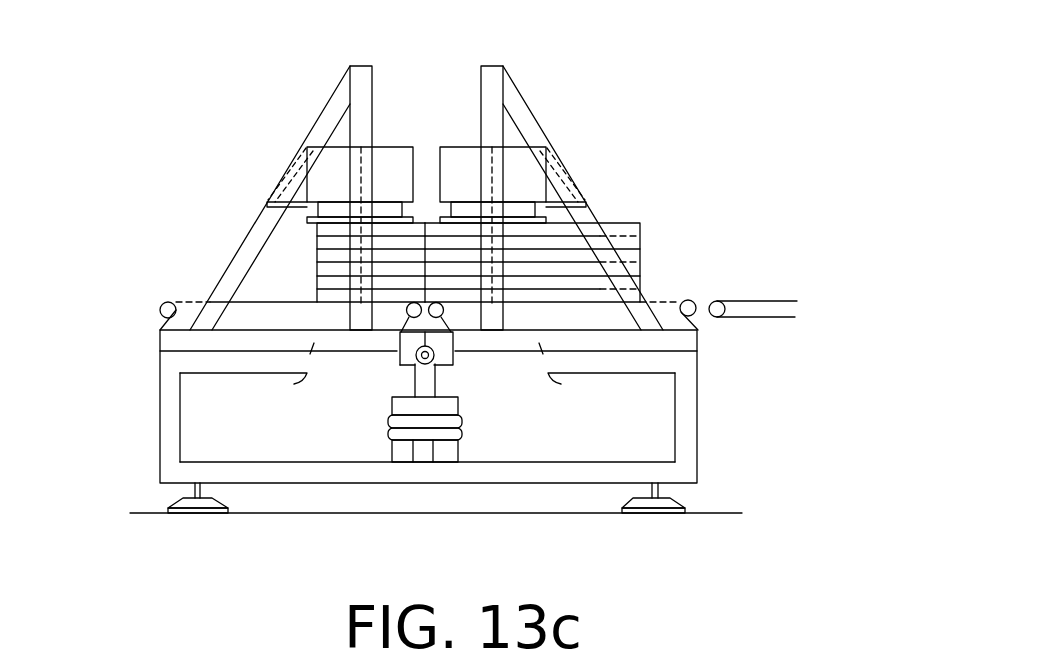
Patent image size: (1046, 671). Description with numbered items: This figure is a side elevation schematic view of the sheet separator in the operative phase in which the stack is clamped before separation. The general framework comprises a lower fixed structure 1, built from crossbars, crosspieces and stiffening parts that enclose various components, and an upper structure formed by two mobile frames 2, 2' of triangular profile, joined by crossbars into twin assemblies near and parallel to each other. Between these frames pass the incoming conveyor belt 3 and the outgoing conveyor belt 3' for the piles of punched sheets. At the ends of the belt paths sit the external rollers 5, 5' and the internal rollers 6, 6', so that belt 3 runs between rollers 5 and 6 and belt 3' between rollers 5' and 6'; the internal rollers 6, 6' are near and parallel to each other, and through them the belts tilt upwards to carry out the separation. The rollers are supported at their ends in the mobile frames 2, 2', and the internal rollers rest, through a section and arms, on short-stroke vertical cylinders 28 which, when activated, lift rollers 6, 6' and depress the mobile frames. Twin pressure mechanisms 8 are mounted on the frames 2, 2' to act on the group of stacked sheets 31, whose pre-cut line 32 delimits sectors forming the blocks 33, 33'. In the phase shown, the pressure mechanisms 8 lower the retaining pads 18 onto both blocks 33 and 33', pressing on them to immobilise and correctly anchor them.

The lower fixed structure 1 is at (687, 440).
The mobile frame 2 is at (281, 167).
The mobile frame 2' is at (572, 167).
The incoming conveyor belt 3 is at (267, 235).
The outgoing conveyor belt 3' is at (560, 252).
The external roller 5 is at (131, 311).
The external roller 5' is at (729, 247).
The internal roller 6 is at (356, 439).
The internal roller 6' is at (481, 433).
The pressure mechanism 8 is at (465, 172).
The retaining pad 18 is at (268, 200).
The vertical cylinder 28 is at (423, 358).
The stacked sheets 31 is at (628, 197).
The pre-cut line 32 is at (422, 264).
The block 33 is at (273, 198).
The block 33' is at (532, 415).